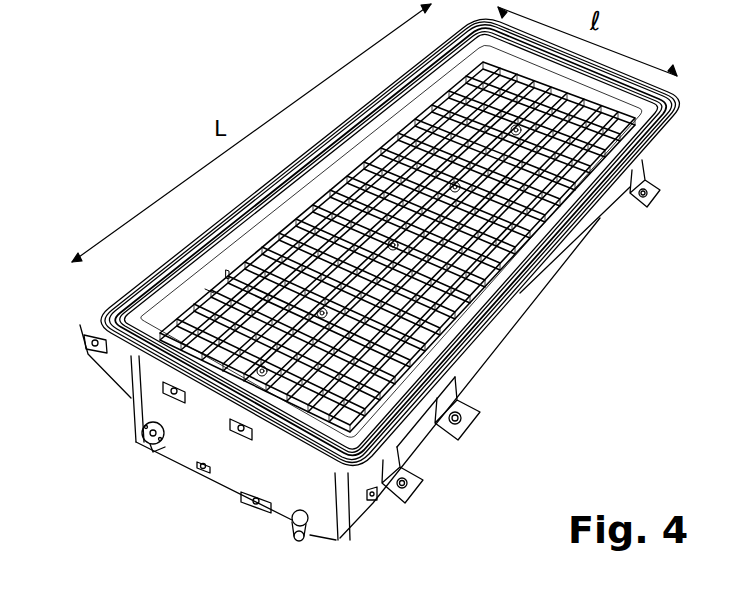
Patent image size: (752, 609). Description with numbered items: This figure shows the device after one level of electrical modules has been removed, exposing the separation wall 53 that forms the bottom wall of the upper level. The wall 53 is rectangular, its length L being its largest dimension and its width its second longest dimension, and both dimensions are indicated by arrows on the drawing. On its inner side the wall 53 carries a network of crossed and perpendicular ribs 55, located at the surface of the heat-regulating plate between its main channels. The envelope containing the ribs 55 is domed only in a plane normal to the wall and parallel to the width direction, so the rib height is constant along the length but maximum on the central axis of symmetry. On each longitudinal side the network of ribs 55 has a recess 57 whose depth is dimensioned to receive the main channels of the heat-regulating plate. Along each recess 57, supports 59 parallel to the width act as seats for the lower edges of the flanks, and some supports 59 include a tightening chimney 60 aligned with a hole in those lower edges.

The separation wall 53 is at (167, 349).
The ribs 55 is at (223, 332).
The recess 57 is at (450, 373).
The supports 59 is at (228, 272).
The tightening chimney 60 is at (212, 287).